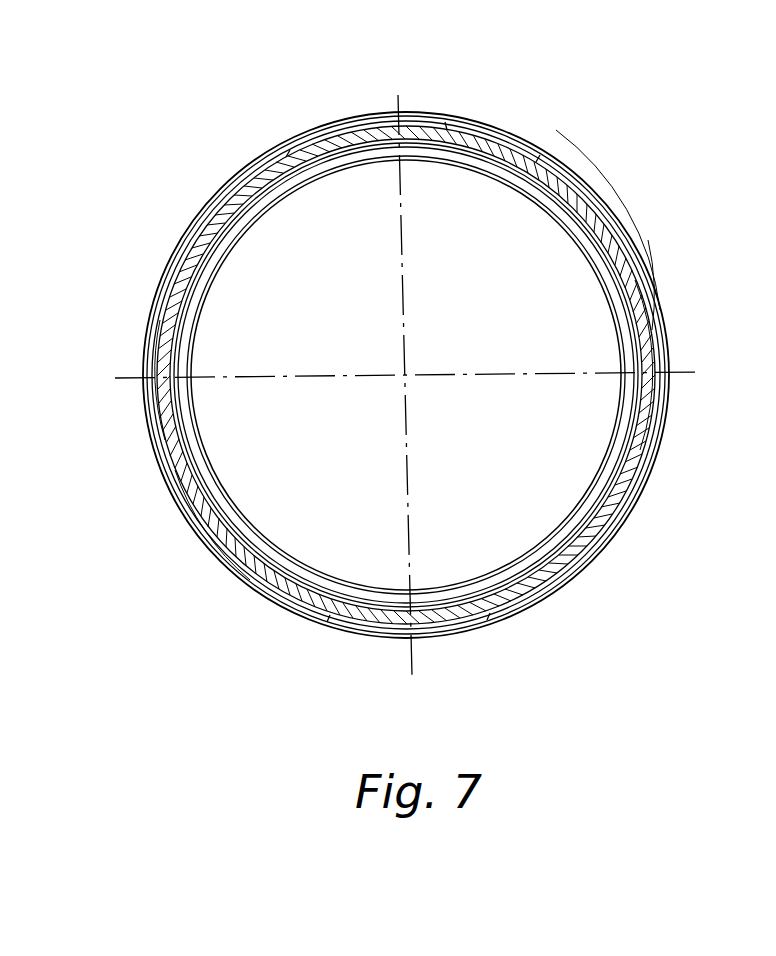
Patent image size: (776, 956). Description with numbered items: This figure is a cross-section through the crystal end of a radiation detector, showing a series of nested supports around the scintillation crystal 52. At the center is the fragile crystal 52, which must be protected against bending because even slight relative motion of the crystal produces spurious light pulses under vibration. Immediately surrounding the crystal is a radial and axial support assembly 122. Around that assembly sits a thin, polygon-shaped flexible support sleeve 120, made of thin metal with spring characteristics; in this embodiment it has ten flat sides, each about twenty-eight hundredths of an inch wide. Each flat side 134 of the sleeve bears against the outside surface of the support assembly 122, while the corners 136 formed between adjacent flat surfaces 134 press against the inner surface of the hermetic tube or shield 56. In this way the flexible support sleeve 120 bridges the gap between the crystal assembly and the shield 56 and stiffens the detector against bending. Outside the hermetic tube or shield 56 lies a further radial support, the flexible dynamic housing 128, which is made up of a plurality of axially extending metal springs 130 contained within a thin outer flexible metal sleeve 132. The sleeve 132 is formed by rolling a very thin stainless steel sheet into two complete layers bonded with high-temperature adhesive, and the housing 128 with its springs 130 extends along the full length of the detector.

The scintillation crystal 52 is at (420, 320).
The hermetic tube or shield 56 is at (286, 165).
The flexible support sleeve 120 is at (277, 185).
The radial and axial support assembly 122 is at (340, 168).
The flexible dynamic housing 128 is at (420, 108).
The axially extending metal springs 130 is at (490, 133).
The outer flexible metal sleeve 132 is at (555, 156).
The flat side 134 is at (632, 356).
The corner 136 is at (635, 298).